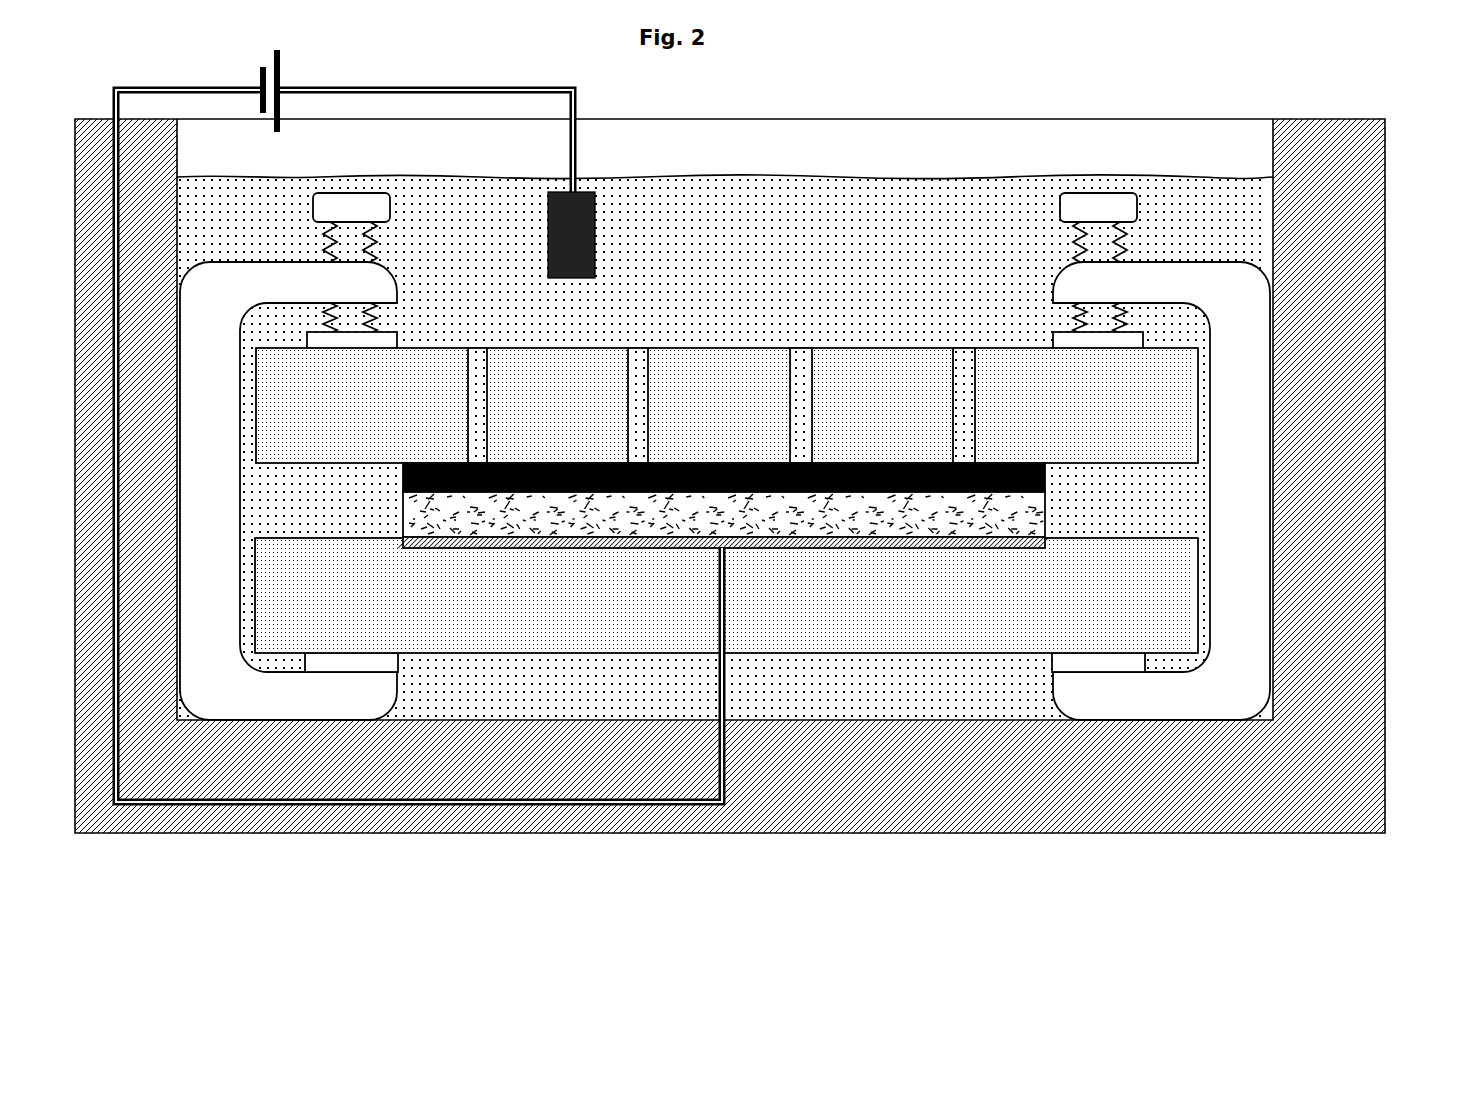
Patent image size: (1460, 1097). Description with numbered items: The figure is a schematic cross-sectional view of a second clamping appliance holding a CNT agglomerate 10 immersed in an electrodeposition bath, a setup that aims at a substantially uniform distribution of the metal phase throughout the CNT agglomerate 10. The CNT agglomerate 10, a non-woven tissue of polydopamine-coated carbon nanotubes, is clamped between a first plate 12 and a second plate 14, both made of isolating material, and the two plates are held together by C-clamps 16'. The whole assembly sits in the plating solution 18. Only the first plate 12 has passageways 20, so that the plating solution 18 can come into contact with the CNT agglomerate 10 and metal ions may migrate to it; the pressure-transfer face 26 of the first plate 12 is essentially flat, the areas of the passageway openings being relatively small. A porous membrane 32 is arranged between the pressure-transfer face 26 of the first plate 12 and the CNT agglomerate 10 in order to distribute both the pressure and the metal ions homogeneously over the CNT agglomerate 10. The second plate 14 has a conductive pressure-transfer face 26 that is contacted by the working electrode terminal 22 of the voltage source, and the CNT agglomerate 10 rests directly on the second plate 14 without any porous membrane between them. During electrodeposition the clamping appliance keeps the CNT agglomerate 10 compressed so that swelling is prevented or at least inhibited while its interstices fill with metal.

The CNT agglomerate 10 is at (1408, 457).
The first plate 12 is at (1200, 357).
The second plate 14 is at (1183, 602).
The C-clamps 16' is at (725, 413).
The plating solution 18 is at (725, 445).
The passageways 20 is at (807, 390).
The working electrode terminal 22 is at (855, 845).
The pressure-transfer face 26 is at (1410, 527).
The porous membrane 32 is at (921, 482).